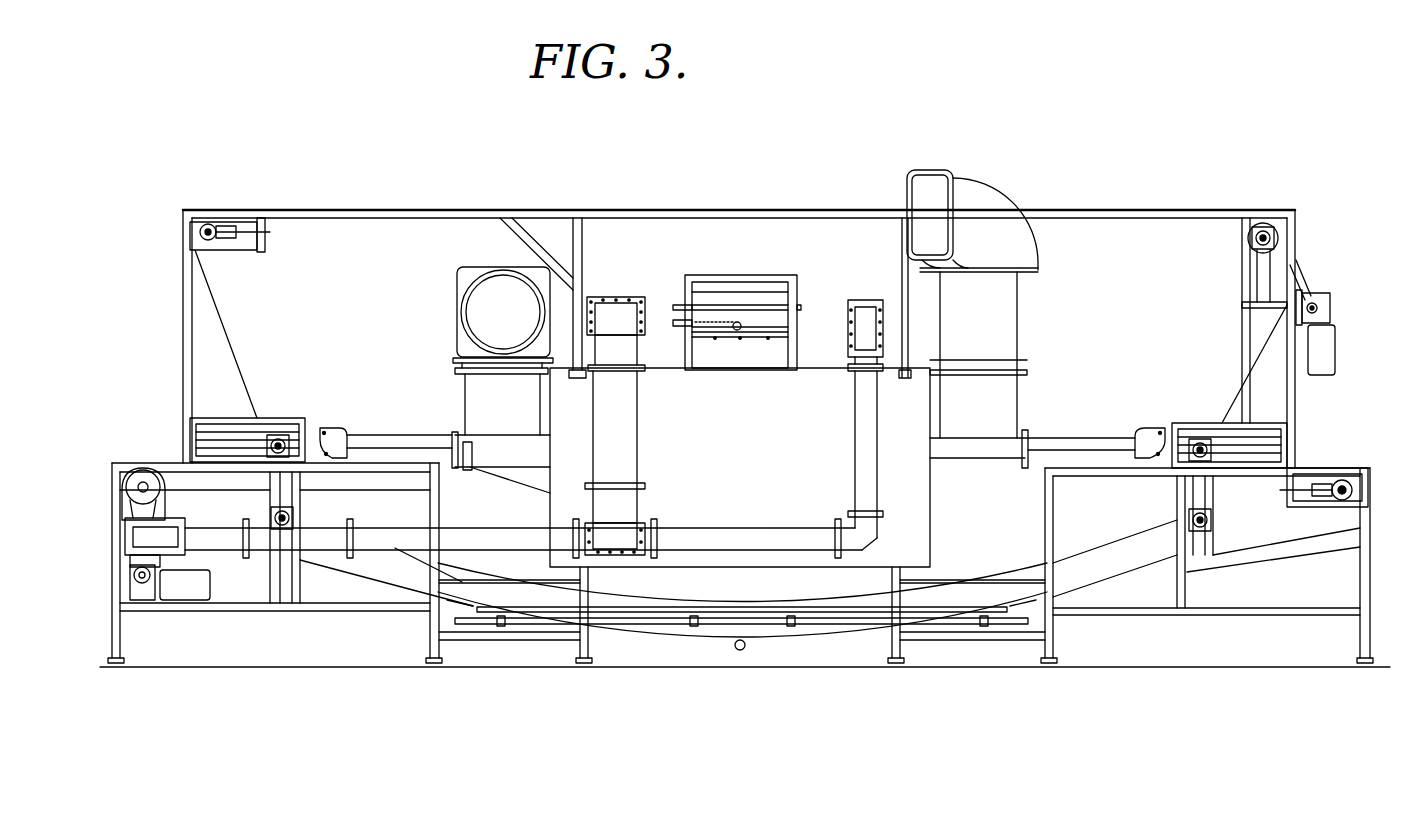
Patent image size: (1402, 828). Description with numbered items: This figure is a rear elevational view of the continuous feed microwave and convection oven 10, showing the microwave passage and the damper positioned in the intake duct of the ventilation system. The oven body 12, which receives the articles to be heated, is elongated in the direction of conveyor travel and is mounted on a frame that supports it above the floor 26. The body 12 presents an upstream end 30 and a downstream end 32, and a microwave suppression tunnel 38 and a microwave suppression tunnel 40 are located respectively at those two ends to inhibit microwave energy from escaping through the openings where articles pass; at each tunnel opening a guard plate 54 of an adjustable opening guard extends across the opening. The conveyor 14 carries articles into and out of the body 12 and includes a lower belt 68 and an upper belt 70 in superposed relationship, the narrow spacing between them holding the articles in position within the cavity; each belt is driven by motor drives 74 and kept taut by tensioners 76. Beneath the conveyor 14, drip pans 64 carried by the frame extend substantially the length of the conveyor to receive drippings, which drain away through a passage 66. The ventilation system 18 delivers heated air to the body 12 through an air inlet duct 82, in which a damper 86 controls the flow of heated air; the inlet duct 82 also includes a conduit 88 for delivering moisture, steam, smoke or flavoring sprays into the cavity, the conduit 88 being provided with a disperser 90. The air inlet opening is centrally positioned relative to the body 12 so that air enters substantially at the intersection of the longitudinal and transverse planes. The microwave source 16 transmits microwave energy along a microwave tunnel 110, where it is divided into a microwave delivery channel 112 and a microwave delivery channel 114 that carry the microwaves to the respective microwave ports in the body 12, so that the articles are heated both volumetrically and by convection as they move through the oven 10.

The continuous feed microwave and convection oven 10 is at (1132, 168).
The oven body 12 is at (938, 520).
The conveyor 14 is at (208, 323).
The microwave source 16 is at (722, 525).
The ventilation system 18 is at (1030, 310).
The floor 26 is at (960, 668).
The upstream end 30 is at (1027, 440).
The downstream end 32 is at (432, 432).
The microwave suppression tunnel 38 is at (368, 440).
The microwave suppression tunnel 40 is at (1087, 437).
The guard plate 54 is at (325, 430).
The drip pans 64 is at (360, 598).
The passage 66 is at (742, 652).
The lower belt 68 is at (1145, 535).
The upper belt 70 is at (232, 338).
The motor drives 74 is at (130, 485).
The tensioners 76 is at (205, 226).
The air inlet duct 82 is at (765, 277).
The damper 86 is at (722, 300).
The conduit 88 is at (680, 330).
The disperser 90 is at (738, 331).
The microwave tunnel 110 is at (782, 525).
The microwave delivery channel 112 is at (640, 440).
The microwave delivery channel 114 is at (858, 412).